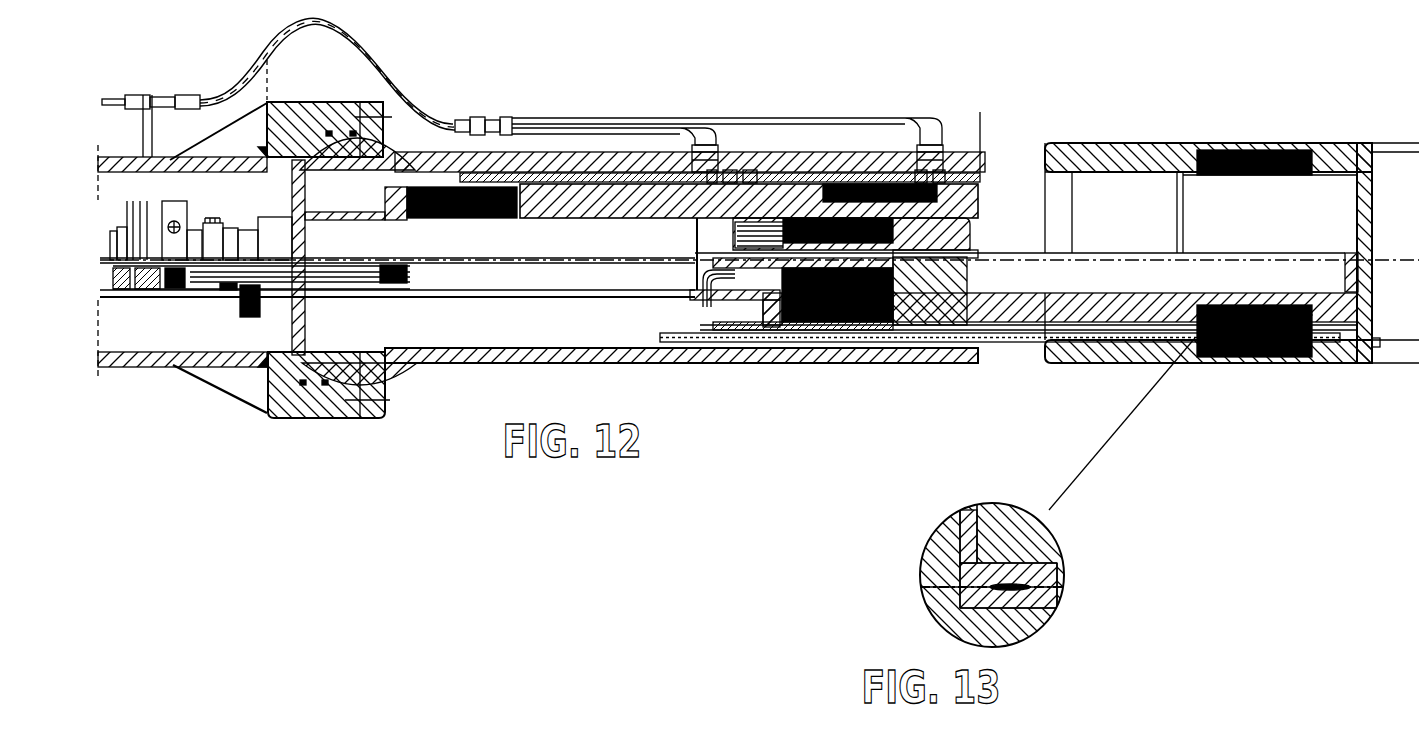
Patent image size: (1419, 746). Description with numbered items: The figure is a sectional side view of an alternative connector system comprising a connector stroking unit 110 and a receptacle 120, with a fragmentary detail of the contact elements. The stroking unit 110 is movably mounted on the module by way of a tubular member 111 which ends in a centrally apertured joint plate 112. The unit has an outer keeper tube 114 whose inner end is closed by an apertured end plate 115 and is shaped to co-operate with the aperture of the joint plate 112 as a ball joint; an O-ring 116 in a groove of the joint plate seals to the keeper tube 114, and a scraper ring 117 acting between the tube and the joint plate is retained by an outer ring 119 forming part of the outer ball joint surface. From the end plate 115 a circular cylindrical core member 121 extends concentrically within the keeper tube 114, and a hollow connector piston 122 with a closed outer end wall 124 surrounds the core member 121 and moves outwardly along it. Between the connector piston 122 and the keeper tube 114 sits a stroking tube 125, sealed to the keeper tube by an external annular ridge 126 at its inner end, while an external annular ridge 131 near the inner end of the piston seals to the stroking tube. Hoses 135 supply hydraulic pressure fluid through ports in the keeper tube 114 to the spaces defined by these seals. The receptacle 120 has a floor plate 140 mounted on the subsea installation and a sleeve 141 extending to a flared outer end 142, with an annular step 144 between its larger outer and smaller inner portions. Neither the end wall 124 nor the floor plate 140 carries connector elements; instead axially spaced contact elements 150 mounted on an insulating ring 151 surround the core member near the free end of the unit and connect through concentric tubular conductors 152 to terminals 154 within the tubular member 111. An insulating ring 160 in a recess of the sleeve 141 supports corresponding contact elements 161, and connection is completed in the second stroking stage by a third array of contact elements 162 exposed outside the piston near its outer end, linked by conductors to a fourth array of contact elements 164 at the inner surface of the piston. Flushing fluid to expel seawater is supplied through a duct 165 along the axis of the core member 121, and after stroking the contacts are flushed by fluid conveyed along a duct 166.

The connector stroking unit 110 is at (495, 367).
The tubular member 111 is at (152, 365).
The joint plate 112 is at (292, 402).
The outer keeper tube 114 is at (797, 158).
The apertured end plate 115 is at (300, 325).
The O-ring 116 is at (329, 133).
The scraper ring 117 is at (352, 132).
The outer ring 119 is at (375, 408).
The receptacle 120 is at (1133, 367).
The core member 121 is at (947, 282).
The connector piston 122 is at (950, 187).
The outer end wall 124 is at (970, 240).
The stroking tube 125 is at (610, 177).
The external annular ridge 126 is at (468, 178).
The external annular ridge 131 is at (537, 182).
The hoses 135 is at (263, 53).
The floor plate 140 is at (1363, 198).
The sleeve 141 is at (1122, 158).
The flared outer end 142 is at (1045, 168).
The annular step 144 is at (1180, 172).
The contact elements 150 is at (868, 222).
The insulating ring 151 is at (783, 222).
The concentric tubular conductors 152 is at (713, 301).
The terminals 154 is at (243, 318).
The insulating ring 160 is at (1253, 153).
The contact elements 161 is at (1262, 350).
The contact elements 162 is at (830, 197).
The contact elements 164 is at (440, 215).
The duct 165 is at (967, 258).
The duct 166 is at (568, 292).